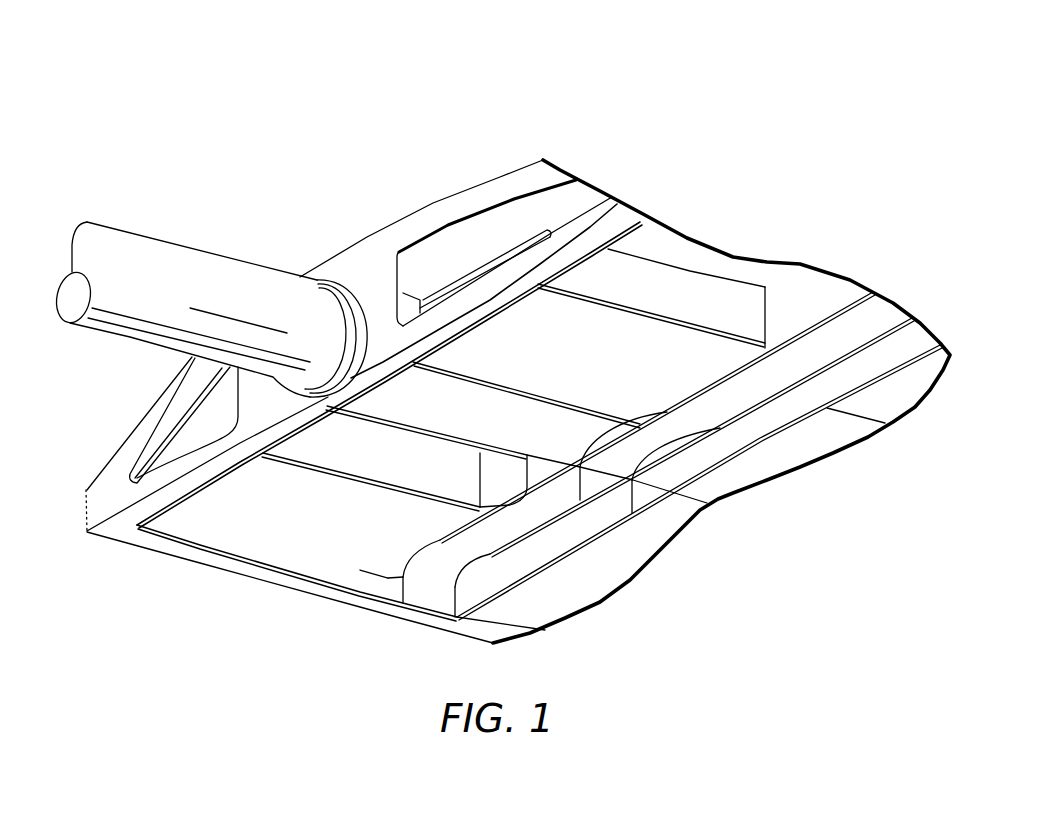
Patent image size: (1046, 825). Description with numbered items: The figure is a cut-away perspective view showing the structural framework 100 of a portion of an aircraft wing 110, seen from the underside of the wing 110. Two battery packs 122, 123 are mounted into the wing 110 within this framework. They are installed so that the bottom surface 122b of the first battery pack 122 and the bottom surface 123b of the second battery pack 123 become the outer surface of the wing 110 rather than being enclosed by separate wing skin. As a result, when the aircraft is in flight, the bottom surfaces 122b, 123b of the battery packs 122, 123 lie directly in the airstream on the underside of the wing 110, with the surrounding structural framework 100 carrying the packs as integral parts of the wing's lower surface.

The structural framework 100 is at (498, 344).
The aircraft wing 110 is at (437, 201).
The battery pack 122 is at (727, 265).
The bottom surface 122b is at (613, 327).
The battery pack 123 is at (296, 594).
The bottom surface 123b is at (328, 550).